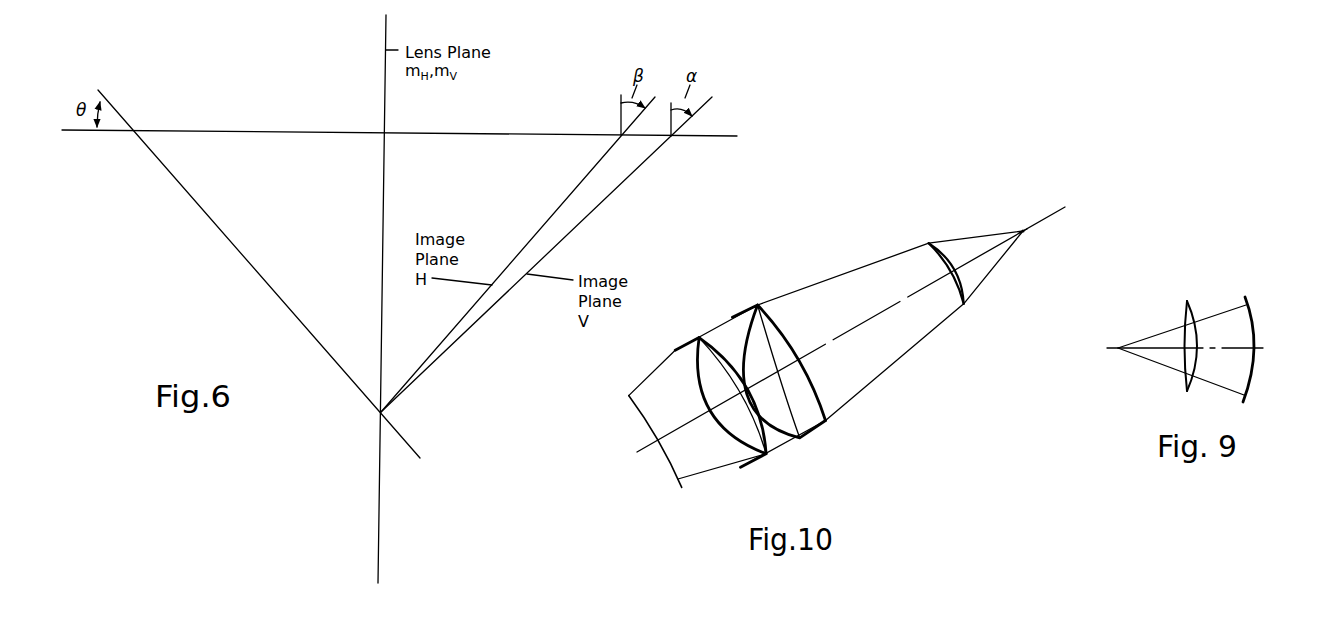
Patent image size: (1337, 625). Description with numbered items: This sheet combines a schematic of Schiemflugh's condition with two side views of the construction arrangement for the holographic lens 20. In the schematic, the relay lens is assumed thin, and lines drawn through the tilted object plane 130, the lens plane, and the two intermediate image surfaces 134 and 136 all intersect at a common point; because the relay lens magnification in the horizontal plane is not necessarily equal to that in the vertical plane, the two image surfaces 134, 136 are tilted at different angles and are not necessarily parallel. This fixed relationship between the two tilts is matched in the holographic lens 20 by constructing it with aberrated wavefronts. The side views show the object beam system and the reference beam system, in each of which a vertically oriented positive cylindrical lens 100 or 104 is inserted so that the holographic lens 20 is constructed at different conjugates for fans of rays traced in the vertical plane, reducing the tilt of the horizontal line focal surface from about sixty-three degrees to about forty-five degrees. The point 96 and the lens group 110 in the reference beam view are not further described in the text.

In FIG. 10, the holographic lens 20 is at (667, 467).
In FIG. 9, the holographic lens 20 is at (1252, 317).
In FIG. 10, the object point / light source point 96 is at (1023, 230).
In FIG. 9, the cylindrical lens 100 is at (1191, 301).
In FIG. 10, the cylindrical lens 104 is at (968, 305).
In FIG. 10, the lens group 110 is at (712, 331).
In FIG. 6, the object plane 130 is at (192, 197).
In FIG. 6, the image surface 134 is at (584, 179).
In FIG. 6, the image surface 136 is at (626, 180).